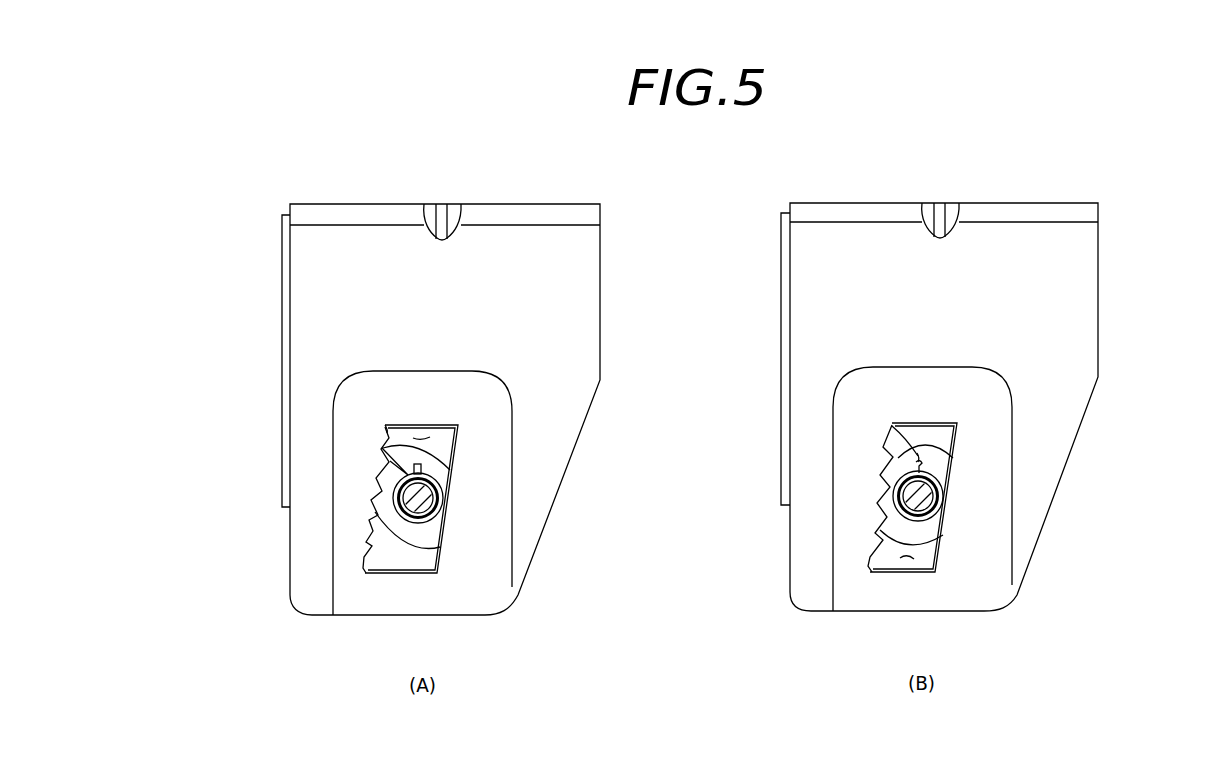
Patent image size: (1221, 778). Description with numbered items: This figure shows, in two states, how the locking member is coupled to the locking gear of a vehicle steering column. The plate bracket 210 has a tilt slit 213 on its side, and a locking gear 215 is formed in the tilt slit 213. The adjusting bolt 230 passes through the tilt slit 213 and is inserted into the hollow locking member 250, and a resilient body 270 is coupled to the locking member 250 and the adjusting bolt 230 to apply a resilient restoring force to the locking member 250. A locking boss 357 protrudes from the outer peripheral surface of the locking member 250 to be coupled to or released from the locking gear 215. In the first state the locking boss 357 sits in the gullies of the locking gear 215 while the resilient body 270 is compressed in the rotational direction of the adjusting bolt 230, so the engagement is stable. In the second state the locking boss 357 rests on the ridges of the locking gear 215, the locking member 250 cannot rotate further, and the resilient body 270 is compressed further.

The plate bracket 210 is at (307, 520).
The tilt slit 213 is at (422, 437).
The locking gear 215 is at (368, 547).
The adjusting bolt 230 is at (403, 503).
The locking member 250 is at (380, 478).
The resilient body 270 is at (410, 502).
The locking boss 357 is at (387, 433).